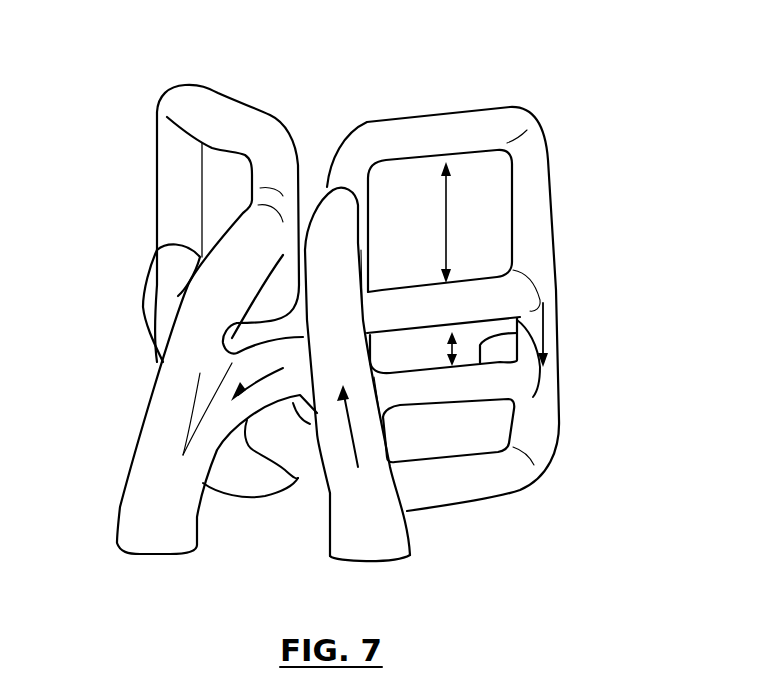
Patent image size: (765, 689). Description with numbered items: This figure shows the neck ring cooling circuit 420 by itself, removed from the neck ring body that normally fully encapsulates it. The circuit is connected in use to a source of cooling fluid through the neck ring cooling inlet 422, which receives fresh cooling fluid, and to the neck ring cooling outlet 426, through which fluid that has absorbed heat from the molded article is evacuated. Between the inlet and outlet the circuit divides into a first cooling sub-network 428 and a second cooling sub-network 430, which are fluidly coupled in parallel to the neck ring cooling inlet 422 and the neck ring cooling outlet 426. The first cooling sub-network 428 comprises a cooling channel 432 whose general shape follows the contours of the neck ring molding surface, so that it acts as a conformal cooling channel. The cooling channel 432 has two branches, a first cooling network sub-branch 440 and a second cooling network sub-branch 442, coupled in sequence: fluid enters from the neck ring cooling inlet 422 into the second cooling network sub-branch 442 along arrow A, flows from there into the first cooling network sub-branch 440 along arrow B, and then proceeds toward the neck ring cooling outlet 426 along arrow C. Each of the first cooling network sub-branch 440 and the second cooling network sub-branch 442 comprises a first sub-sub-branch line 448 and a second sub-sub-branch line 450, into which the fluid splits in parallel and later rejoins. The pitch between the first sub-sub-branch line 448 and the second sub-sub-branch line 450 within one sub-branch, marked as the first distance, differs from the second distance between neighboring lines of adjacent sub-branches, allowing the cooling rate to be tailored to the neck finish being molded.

The neck ring cooling circuit 420 is at (590, 195).
The neck ring cooling inlet 422 is at (367, 573).
The neck ring cooling outlet 426 is at (150, 555).
The first cooling sub-network 428 is at (486, 92).
The second cooling sub-network 430 is at (200, 76).
The cooling channel 432 is at (543, 143).
The first cooling network sub-branch 440 is at (558, 423).
The second cooling network sub-branch 442 is at (552, 216).
The first sub-sub-branch line 448 is at (392, 120).
The second sub-sub-branch line 450 is at (400, 303).